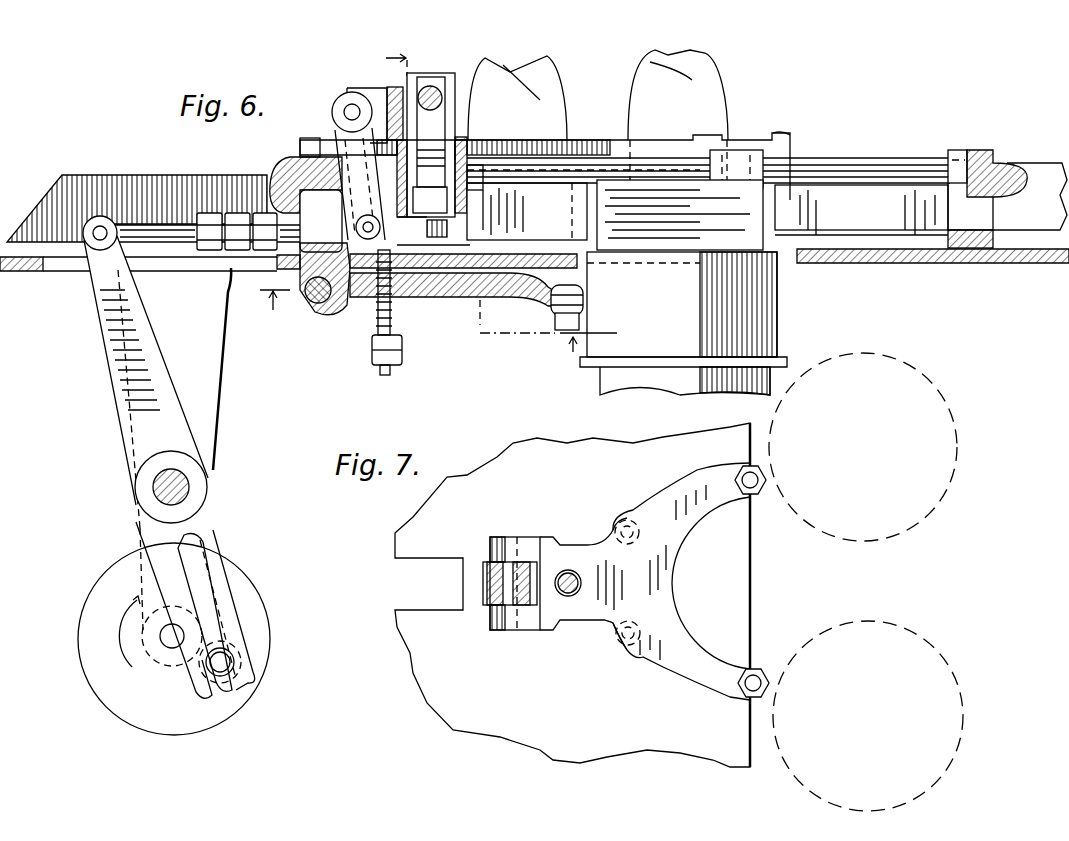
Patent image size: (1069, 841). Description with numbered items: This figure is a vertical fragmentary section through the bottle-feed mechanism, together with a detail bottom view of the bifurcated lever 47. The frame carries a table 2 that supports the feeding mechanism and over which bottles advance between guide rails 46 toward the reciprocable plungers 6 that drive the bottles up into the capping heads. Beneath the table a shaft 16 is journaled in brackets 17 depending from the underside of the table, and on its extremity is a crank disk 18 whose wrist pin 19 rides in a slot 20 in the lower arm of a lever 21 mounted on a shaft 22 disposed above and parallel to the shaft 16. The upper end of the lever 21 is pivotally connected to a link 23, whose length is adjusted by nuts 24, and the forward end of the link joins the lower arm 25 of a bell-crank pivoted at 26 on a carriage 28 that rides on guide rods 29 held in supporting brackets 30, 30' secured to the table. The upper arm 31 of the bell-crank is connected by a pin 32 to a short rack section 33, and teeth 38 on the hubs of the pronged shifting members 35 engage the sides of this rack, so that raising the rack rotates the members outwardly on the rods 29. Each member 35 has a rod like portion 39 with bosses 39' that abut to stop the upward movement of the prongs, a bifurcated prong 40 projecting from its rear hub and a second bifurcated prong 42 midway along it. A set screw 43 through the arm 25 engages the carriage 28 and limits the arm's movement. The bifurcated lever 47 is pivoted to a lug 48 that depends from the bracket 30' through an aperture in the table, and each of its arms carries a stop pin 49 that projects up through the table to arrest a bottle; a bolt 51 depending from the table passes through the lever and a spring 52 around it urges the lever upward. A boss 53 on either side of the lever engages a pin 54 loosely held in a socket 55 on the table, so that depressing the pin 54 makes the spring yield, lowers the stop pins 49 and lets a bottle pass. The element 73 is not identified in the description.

In FIG. 7, the table 2 is at (679, 582).
In FIG. 6, the plunger 6 is at (778, 306).
In FIG. 6, the shaft 16 is at (170, 650).
In FIG. 6, the bracket 17 is at (224, 378).
In FIG. 6, the crank disk 18 is at (80, 610).
In FIG. 6, the wrist pin 19 is at (232, 660).
In FIG. 6, the slot 20 is at (212, 590).
In FIG. 6, the lever 21 is at (112, 372).
In FIG. 6, the shaft 22 is at (190, 487).
In FIG. 6, the link 23 is at (321, 221).
In FIG. 6, the nuts 24 is at (242, 252).
In FIG. 6, the lower arm 25 is at (360, 184).
In FIG. 6, the pivot 26 is at (346, 106).
In FIG. 6, the carriage 28 is at (460, 138).
In FIG. 6, the guide rod 29 is at (882, 142).
In FIG. 6, the supporting bracket 30 is at (1007, 179).
In FIG. 6, the supporting bracket 30' is at (296, 178).
In FIG. 6, the upper arm 31 is at (378, 88).
In FIG. 6, the pin 32 is at (433, 86).
In FIG. 6, the rack section 33 is at (431, 145).
In FIG. 6, the shifting member 35 is at (620, 141).
In FIG. 6, the teeth 38 is at (387, 243).
In FIG. 6, the rod like portion 39 is at (517, 99).
In FIG. 6, the boss 39' is at (678, 95).
In FIG. 6, the bifurcated prong 40 is at (762, 150).
In FIG. 6, the second bifurcated prong 42 is at (655, 130).
In FIG. 6, the set screw 43 is at (315, 140).
In FIG. 6, the guide rail 46 is at (182, 176).
In FIG. 6, the bifurcated lever 47 is at (475, 300).
In FIG. 7, the bifurcated lever 47 is at (586, 547).
In FIG. 6, the lug 48 is at (308, 305).
In FIG. 7, the lug 48 is at (492, 603).
In FIG. 6, the stop pin 49 is at (583, 258).
In FIG. 7, the stop pin 49 is at (745, 470).
In FIG. 6, the bolt 51 is at (392, 372).
In FIG. 7, the bolt 51 is at (567, 596).
In FIG. 6, the spring 52 is at (392, 314).
In FIG. 6, the boss 53 is at (555, 285).
In FIG. 7, the boss 53 is at (632, 520).
In FIG. 6, the pin 54 is at (470, 204).
In FIG. 7, the pin 54 is at (630, 544).
In FIG. 6, the socket 55 is at (470, 240).
In FIG. 6, the box 73 is at (680, 215).